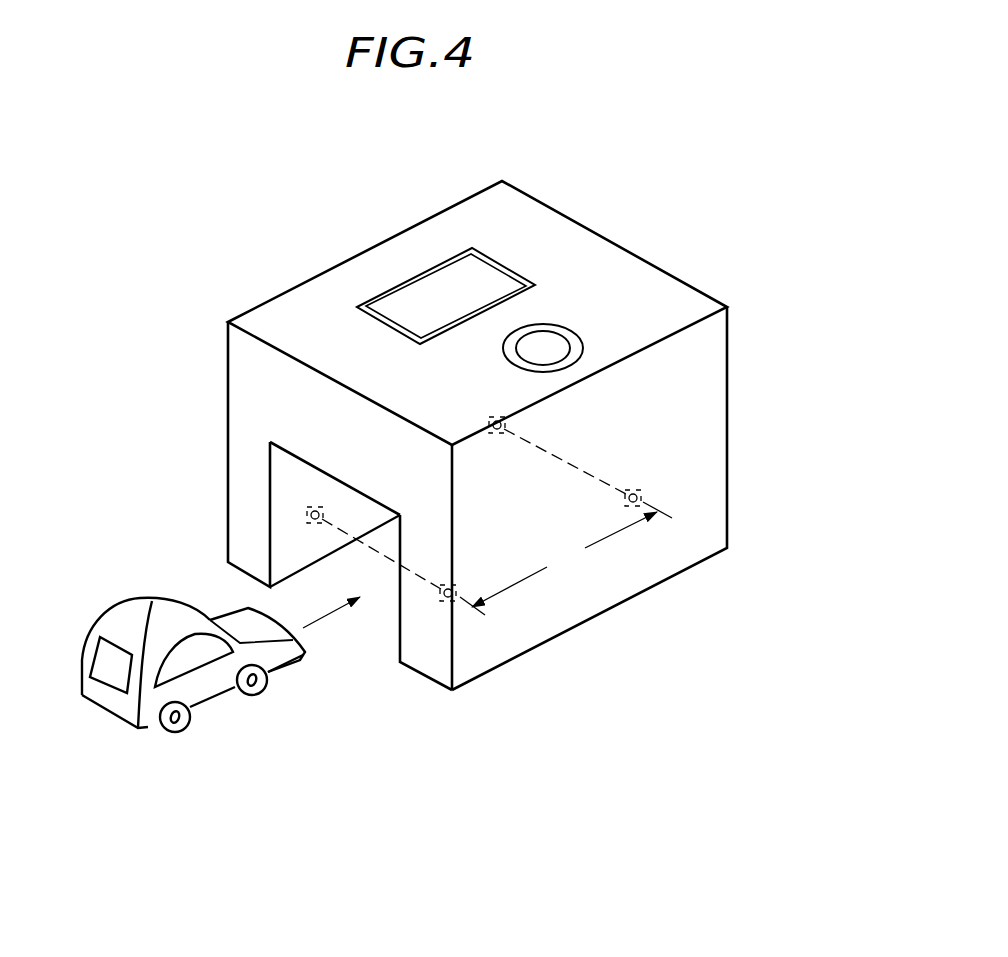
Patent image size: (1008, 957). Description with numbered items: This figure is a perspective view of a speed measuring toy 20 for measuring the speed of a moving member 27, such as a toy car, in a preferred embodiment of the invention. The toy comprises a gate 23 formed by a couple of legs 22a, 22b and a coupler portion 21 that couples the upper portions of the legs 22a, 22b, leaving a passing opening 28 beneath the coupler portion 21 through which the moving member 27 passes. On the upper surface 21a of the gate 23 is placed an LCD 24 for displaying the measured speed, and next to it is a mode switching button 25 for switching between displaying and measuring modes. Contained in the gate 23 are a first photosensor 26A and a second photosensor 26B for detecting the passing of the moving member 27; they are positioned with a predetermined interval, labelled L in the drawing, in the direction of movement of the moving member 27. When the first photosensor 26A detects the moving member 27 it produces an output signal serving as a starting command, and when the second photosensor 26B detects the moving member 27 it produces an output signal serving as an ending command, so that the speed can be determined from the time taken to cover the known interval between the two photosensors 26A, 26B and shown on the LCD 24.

The speed measuring toy 20 is at (471, 412).
The coupler portion 21 is at (432, 426).
The upper surface 21a is at (277, 318).
The leg 22a is at (238, 482).
The leg 22b is at (440, 637).
The gate 23 is at (392, 462).
The LCD 24 is at (455, 257).
The mode switching button 25 is at (552, 342).
The first photosensor 26A is at (343, 540).
The second photosensor 26B is at (578, 467).
The moving member 27 is at (213, 683).
The passing opening 28 is at (380, 597).